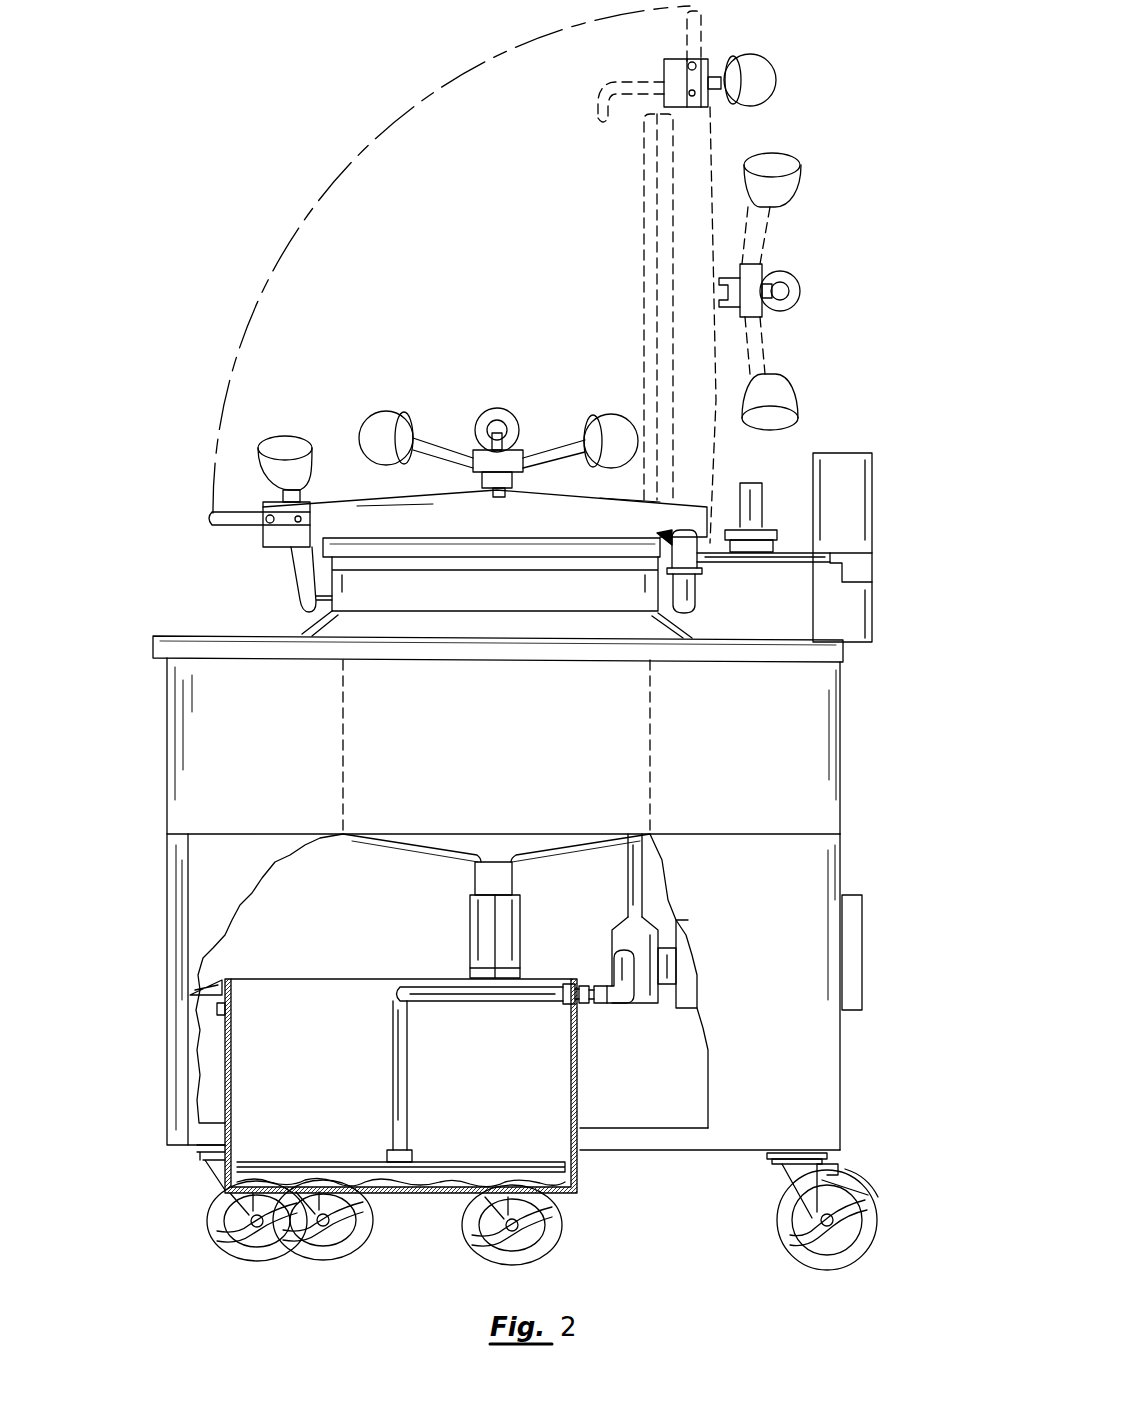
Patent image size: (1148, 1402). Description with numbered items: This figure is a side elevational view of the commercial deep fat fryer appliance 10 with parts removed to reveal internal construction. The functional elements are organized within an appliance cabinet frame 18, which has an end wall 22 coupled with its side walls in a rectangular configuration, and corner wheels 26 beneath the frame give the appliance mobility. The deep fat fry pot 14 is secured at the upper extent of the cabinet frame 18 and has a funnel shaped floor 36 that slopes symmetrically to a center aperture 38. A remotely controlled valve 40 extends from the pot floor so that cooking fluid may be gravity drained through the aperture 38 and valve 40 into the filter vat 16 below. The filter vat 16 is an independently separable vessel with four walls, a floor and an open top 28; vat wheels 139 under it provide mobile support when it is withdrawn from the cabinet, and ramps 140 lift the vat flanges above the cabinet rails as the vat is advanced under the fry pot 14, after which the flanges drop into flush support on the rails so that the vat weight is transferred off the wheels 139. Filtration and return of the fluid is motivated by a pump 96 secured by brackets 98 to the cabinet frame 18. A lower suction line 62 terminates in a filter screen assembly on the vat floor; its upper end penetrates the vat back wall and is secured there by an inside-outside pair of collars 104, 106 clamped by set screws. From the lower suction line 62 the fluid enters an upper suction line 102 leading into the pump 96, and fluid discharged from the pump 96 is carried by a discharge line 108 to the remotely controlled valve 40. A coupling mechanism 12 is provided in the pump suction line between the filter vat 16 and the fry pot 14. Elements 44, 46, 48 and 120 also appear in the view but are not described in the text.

The commercial deep fat fryer appliance 10 is at (176, 408).
The coupling mechanism 12 is at (603, 983).
The deep fat fry pot 14 is at (654, 752).
The filter vat 16 is at (270, 983).
The appliance cabinet frame 18 is at (842, 750).
The end wall 22 is at (842, 868).
The corner wheels 26 is at (257, 1260).
The open top 28 is at (345, 978).
The funnel shaped floor 36 is at (398, 843).
The center aperture 38 is at (495, 862).
The remotely controlled valve 40 is at (478, 873).
The lid handwheel 44 is at (347, 500).
The hinge pin 46 is at (710, 543).
The hinge arm 48 is at (300, 600).
The lower suction line 62 is at (473, 1003).
The pump 96 is at (648, 940).
The brackets 98 is at (672, 965).
The upper suction line 102 is at (640, 983).
The collar 104 is at (566, 1005).
The collar 106 is at (625, 947).
The discharge line 108 is at (643, 875).
The drain fitting 120 is at (217, 1010).
The vat wheels 139 is at (352, 1252).
The ramps 140 is at (190, 988).